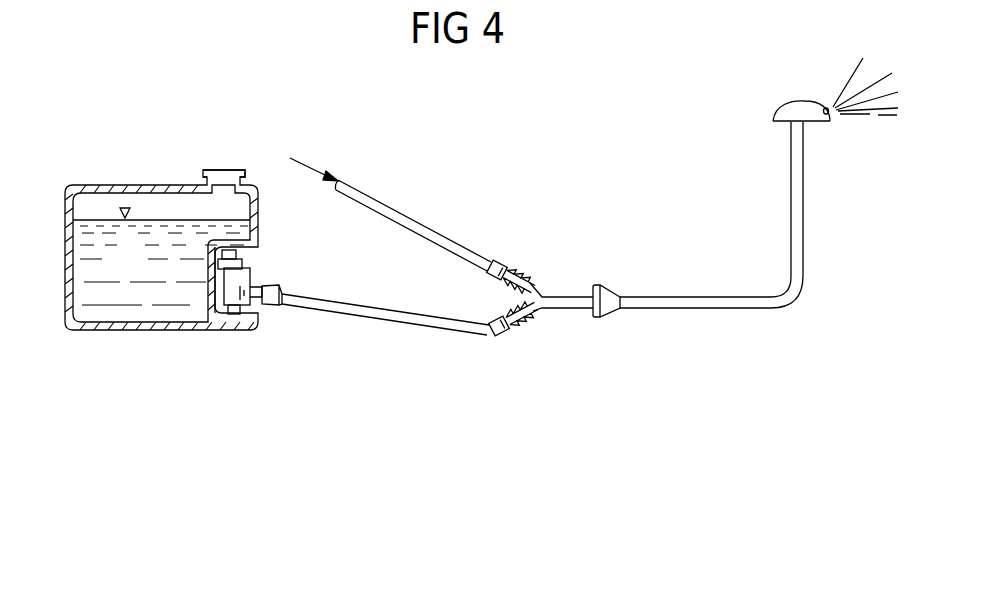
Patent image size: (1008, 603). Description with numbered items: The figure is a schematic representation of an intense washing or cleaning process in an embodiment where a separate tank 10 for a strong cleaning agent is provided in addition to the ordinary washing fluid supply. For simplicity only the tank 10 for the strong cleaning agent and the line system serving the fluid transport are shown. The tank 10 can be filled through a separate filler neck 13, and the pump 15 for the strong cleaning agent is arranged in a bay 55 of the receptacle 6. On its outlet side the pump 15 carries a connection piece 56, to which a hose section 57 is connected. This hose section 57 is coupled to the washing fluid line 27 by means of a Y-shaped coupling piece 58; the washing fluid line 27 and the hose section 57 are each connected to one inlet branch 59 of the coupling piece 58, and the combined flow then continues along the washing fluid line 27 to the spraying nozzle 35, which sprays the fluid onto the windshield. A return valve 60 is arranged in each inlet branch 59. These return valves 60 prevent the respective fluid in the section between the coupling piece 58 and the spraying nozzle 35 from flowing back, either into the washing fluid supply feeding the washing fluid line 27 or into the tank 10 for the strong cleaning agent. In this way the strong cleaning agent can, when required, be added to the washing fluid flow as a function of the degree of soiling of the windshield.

The receptacle 6 is at (115, 170).
The tank for strong cleaning agent 10 is at (142, 259).
The filler neck 13 is at (233, 170).
The pump 15 is at (232, 290).
The washing fluid line 27 is at (337, 192).
The spraying nozzle 35 is at (791, 100).
The bay 55 is at (258, 248).
The connection piece 56 is at (267, 287).
The hose section 57 is at (350, 313).
The Y-shaped coupling piece 58 is at (574, 307).
The inlet branch 59 is at (516, 282).
The return valve 60 is at (500, 273).